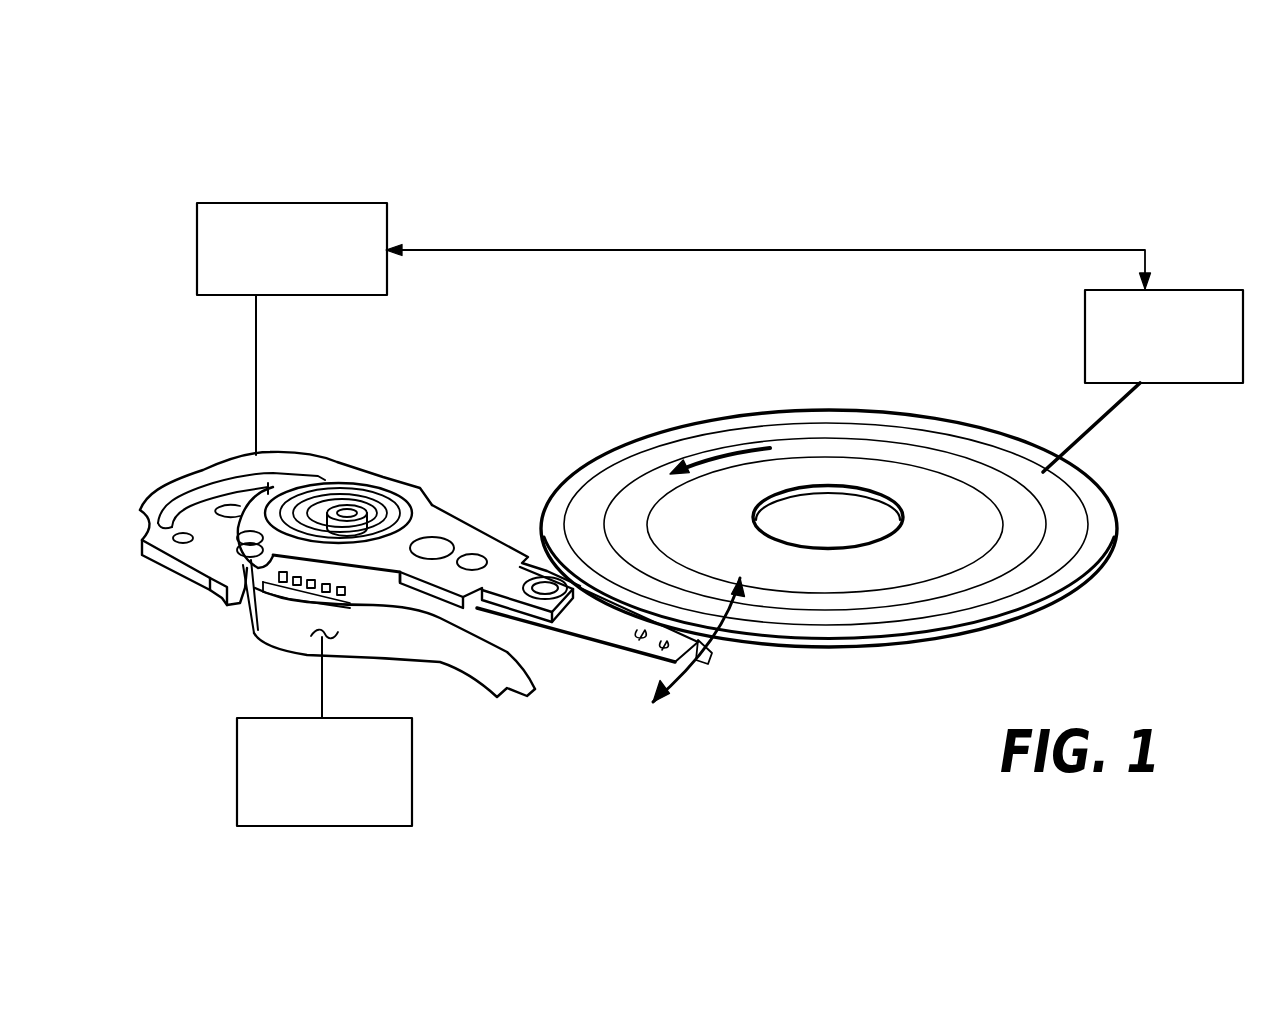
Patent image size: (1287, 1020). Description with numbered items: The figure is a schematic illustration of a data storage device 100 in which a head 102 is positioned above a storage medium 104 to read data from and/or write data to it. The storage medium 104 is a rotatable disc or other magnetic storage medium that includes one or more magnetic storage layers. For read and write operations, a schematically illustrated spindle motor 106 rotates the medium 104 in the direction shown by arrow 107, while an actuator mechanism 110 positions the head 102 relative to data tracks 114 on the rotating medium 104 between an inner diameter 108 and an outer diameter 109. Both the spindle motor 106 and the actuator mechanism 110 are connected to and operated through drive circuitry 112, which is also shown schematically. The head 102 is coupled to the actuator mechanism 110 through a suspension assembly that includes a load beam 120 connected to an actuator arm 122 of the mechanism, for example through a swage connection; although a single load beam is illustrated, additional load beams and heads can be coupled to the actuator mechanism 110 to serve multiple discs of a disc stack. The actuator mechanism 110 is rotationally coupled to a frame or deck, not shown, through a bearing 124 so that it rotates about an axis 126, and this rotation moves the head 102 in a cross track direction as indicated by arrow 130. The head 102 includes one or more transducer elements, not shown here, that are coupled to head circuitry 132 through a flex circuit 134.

The data storage device 100 is at (1028, 180).
The head 102 is at (708, 660).
The storage medium 104 is at (972, 424).
The spindle motor 106 is at (1240, 292).
The arrow 107 is at (730, 450).
The inner diameter 108 is at (871, 490).
The outer diameter 109 is at (836, 409).
The actuator mechanism 110 is at (378, 452).
The drive circuitry 112 is at (387, 212).
The data tracks 114 is at (987, 553).
The load beam 120 is at (585, 609).
The actuator arm 122 is at (490, 532).
The bearing 124 is at (337, 512).
The axis 126 is at (348, 512).
The arrow 130 is at (732, 623).
The head circuitry 132 is at (412, 773).
The flex circuit 134 is at (406, 647).